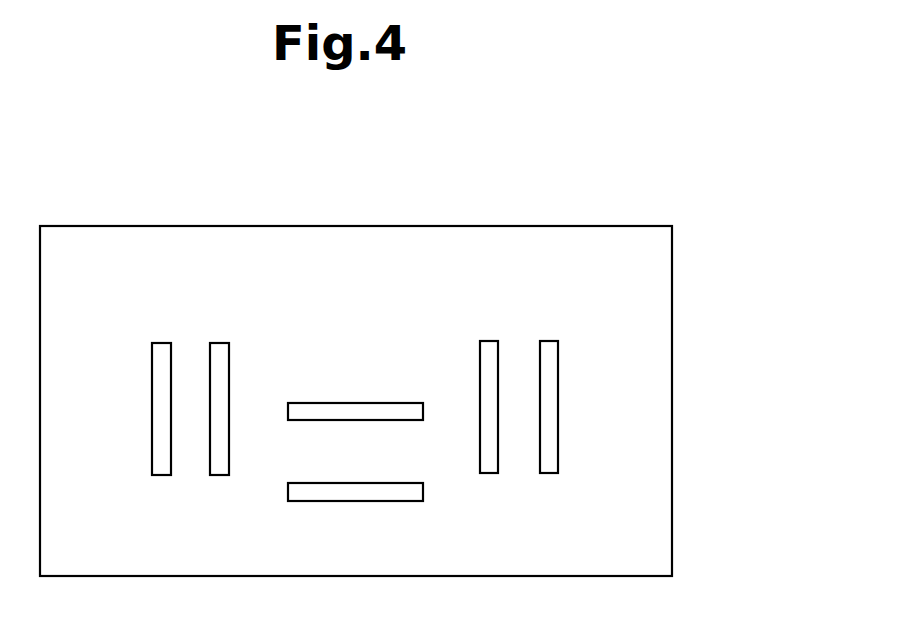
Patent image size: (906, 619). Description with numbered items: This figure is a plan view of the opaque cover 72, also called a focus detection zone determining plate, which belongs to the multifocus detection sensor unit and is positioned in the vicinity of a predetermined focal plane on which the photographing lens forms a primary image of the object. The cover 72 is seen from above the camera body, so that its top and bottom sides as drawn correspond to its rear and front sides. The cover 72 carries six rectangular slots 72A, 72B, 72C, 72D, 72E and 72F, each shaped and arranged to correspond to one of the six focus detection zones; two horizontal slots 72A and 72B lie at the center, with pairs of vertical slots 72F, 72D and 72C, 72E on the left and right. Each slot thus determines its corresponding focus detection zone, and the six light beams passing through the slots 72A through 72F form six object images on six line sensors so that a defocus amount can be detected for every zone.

The cover 72 is at (652, 300).
The rectangular slot 72A is at (335, 410).
The rectangular slot 72B is at (388, 490).
The rectangular slot 72C is at (487, 352).
The rectangular slot 72D is at (221, 352).
The rectangular slot 72E is at (550, 352).
The rectangular slot 72F is at (163, 352).